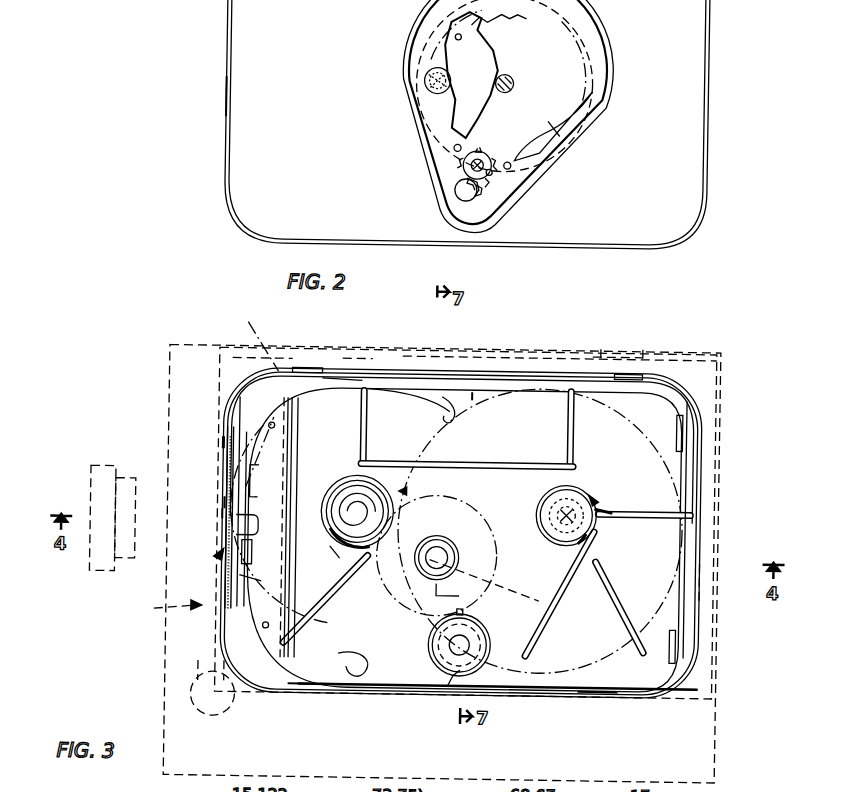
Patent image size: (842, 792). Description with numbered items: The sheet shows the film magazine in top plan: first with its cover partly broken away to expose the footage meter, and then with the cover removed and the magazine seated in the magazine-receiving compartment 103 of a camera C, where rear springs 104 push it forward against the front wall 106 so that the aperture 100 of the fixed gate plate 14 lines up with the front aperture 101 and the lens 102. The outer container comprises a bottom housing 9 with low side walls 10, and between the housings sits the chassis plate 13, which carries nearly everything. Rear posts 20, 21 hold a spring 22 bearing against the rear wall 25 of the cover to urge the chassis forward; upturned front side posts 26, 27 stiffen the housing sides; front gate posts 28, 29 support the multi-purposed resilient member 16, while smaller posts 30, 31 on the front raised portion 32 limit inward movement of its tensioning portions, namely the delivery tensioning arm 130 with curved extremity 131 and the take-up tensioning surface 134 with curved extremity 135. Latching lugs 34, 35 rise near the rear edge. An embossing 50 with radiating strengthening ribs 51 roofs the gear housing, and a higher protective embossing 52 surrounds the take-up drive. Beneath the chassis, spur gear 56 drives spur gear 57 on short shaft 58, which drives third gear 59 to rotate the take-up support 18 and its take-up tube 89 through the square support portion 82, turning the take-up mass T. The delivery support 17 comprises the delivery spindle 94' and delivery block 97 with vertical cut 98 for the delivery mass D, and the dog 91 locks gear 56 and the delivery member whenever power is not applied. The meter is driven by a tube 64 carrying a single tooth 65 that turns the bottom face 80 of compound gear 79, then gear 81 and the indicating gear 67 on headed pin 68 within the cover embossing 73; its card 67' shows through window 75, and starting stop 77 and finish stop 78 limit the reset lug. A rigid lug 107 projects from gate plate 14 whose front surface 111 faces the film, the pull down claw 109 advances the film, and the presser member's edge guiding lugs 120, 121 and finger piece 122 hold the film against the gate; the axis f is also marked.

In FIG. 3, the bottom housing 9 is at (682, 655).
In FIG. 3, the side walls 10 is at (700, 398).
In FIG. 3, the chassis plate 13 is at (464, 540).
In FIG. 3, the gate plate 14 is at (490, 390).
In FIG. 3, the resilient member 16 is at (342, 405).
In FIG. 3, the delivery support 17 is at (598, 500).
In FIG. 3, the take-up support 18 is at (415, 490).
In FIG. 3, the rear post 20 is at (675, 434).
In FIG. 3, the rear post 21 is at (671, 630).
In FIG. 3, the spring 22 is at (687, 462).
In FIG. 3, the rear wall 25 is at (692, 512).
In FIG. 3, the front side post 26 is at (300, 370).
In FIG. 3, the front side post 27 is at (307, 692).
In FIG. 3, the front gate post 28 is at (258, 502).
In FIG. 3, the front gate post 29 is at (252, 557).
In FIG. 3, the upstanding post 30 is at (262, 415).
In FIG. 3, the upstanding post 31 is at (253, 650).
In FIG. 3, the front raised portion 32 is at (276, 527).
In FIG. 3, the latching lug 34 is at (626, 370).
In FIG. 3, the latching lug 35 is at (606, 694).
In FIG. 3, the embossing 50 is at (485, 542).
In FIG. 3, the strengthening ribs 51 is at (368, 424).
In FIG. 3, the protective embossing 52 is at (458, 652).
In FIG. 3, the spur gear 56 is at (480, 672).
In FIG. 3, the spur gear 57 is at (487, 548).
In FIG. 3, the short shaft 58 is at (437, 545).
In FIG. 3, the third gear 59 is at (320, 564).
In FIG. 2, the tube 64 is at (468, 200).
In FIG. 3, the tube 64 is at (440, 662).
In FIG. 2, the single tooth 65 is at (483, 197).
In FIG. 3, the single tooth 65 is at (458, 616).
In FIG. 2, the indicating gear 67 is at (504, 86).
In FIG. 2, the card 67' is at (471, 75).
In FIG. 2, the headed pin 68 is at (506, 74).
In FIG. 2, the embossing 73 is at (553, 127).
In FIG. 2, the window 75 is at (424, 82).
In FIG. 2, the starting stop 77 is at (454, 148).
In FIG. 2, the finish stop 78 is at (512, 168).
In FIG. 2, the intermediate compound spur gear 79 is at (493, 175).
In FIG. 2, the bottom face 80 is at (482, 187).
In FIG. 2, the gear 81 is at (490, 148).
In FIG. 3, the square support portion 82 is at (336, 505).
In FIG. 3, the take-up tube 89 is at (372, 490).
In FIG. 3, the dog 91 is at (552, 602).
In FIG. 3, the delivery spindle 94' is at (616, 548).
In FIG. 3, the delivery block 97 is at (590, 500).
In FIG. 3, the vertical cut 98 is at (558, 532).
In FIG. 3, the aperture 100 is at (224, 513).
In FIG. 3, the aperture 101 is at (222, 505).
In FIG. 3, the lens 102 is at (90, 496).
In FIG. 3, the magazine-receiving compartment 103 is at (708, 581).
In FIG. 3, the springs 104 is at (358, 352).
In FIG. 3, the front wall 106 is at (258, 360).
In FIG. 2, the rigid lug 107 is at (225, 100).
In FIG. 3, the rigid lug 107 is at (218, 560).
In FIG. 3, the pull down claw 109 is at (158, 616).
In FIG. 3, the front surface 111 is at (228, 574).
In FIG. 3, the edge guiding lug 120 is at (230, 448).
In FIG. 3, the edge guiding lug 121 is at (203, 683).
In FIG. 3, the finger piece 122 is at (232, 528).
In FIG. 3, the delivery tensioning arm 130 is at (404, 390).
In FIG. 3, the curved extremity 131 is at (454, 402).
In FIG. 3, the take-up tensioning surface 134 is at (320, 692).
In FIG. 3, the curved extremity 135 is at (497, 693).
In FIG. 3, the camera C is at (165, 409).
In FIG. 3, the delivery mass D is at (540, 531).
In FIG. 3, the take-up mass T is at (443, 464).
In FIG. 3, the axis f is at (255, 338).